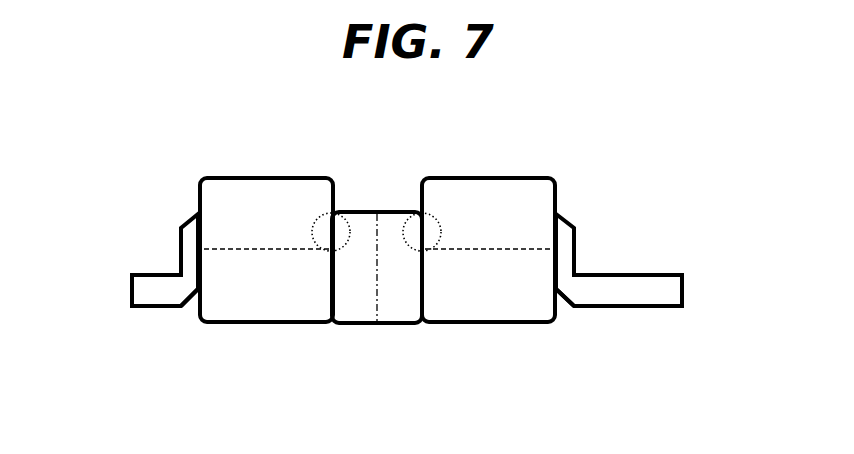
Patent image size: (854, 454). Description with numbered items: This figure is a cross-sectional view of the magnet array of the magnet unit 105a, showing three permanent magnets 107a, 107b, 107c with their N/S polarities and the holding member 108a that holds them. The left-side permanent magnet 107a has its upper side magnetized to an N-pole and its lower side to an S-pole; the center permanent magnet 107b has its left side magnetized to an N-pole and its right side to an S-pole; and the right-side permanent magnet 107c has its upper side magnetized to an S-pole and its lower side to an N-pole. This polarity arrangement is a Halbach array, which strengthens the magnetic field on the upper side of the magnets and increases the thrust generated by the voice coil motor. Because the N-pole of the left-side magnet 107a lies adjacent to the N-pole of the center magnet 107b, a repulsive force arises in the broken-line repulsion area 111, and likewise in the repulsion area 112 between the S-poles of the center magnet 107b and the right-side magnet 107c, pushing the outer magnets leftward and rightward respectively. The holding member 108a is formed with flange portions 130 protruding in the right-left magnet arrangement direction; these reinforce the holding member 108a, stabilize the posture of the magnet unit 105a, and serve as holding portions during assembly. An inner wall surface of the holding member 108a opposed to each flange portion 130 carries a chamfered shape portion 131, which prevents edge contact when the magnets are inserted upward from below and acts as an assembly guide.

The magnet unit 105a is at (602, 182).
The permanent magnet 107a is at (247, 197).
The permanent magnet 107b is at (362, 210).
The permanent magnet 107c is at (518, 192).
The holding member 108a is at (190, 221).
The repulsion area 111 is at (317, 216).
The repulsion area 112 is at (438, 217).
The flange portion 130 is at (152, 290).
The chamfered shape portion 131 is at (186, 302).